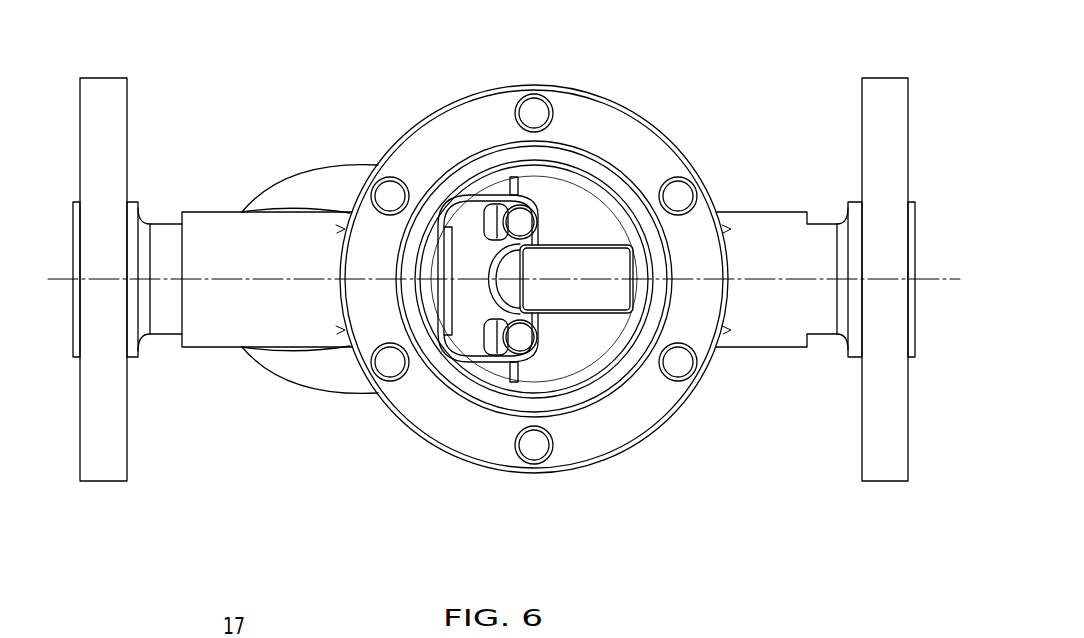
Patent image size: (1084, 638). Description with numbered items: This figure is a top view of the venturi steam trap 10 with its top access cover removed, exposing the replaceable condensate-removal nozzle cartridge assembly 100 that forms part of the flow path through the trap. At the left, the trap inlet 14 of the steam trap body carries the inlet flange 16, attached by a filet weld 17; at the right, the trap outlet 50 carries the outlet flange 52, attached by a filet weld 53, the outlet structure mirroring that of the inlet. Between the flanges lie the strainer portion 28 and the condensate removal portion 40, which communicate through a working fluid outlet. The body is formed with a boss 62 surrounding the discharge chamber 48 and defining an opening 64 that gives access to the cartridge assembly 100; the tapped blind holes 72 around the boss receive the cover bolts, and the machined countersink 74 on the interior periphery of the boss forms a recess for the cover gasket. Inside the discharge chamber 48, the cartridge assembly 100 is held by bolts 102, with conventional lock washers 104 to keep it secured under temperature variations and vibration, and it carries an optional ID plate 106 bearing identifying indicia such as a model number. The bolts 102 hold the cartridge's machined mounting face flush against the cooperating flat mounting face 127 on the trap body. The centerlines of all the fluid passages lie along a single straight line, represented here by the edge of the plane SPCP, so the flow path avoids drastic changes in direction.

The venturi steam trap 10 is at (270, 64).
The trap inlet 14 is at (70, 222).
The inlet flange 16 is at (105, 88).
The filet weld 17 is at (143, 342).
The strainer portion 28 is at (232, 326).
The condensate removal portion 40 is at (772, 222).
The discharge chamber 48 is at (548, 367).
The trap outlet 50 is at (915, 228).
The outlet flange 52 is at (885, 88).
The filet weld 53 is at (838, 340).
The boss 62 is at (633, 126).
The opening 64 is at (578, 187).
The tapped blind holes 72 is at (391, 190).
The machined countersink 74 is at (632, 170).
The replaceable condensate-removal nozzle cartridge assembly 100 is at (605, 300).
The bolts 102 is at (522, 222).
The lock washers 104 is at (477, 210).
The ID plate 106 is at (465, 372).
The flat mounting face 127 is at (490, 187).
The plane SPCP is at (195, 279).